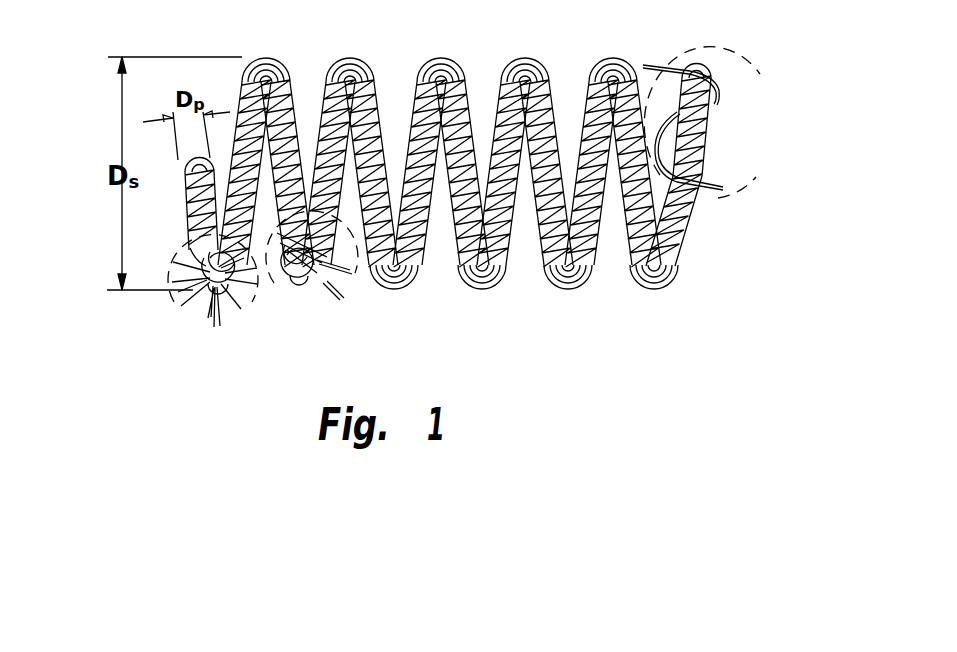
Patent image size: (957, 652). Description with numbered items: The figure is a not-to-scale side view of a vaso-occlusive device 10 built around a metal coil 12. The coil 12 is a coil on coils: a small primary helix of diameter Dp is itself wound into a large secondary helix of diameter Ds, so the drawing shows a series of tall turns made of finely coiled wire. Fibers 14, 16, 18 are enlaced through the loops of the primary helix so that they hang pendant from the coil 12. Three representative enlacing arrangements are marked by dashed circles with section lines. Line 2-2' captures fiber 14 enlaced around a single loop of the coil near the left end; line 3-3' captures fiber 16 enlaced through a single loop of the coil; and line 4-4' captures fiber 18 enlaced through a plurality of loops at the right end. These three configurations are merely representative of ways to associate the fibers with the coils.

The device 10 is at (458, 211).
The metal coil 12 is at (681, 223).
The fiber 14 is at (210, 310).
The fiber 16 is at (326, 298).
The fiber 18 is at (703, 185).
The line 2-2' 2 is at (258, 314).
The line 3-3' 3 is at (358, 282).
The line 4-4' 4 is at (757, 174).